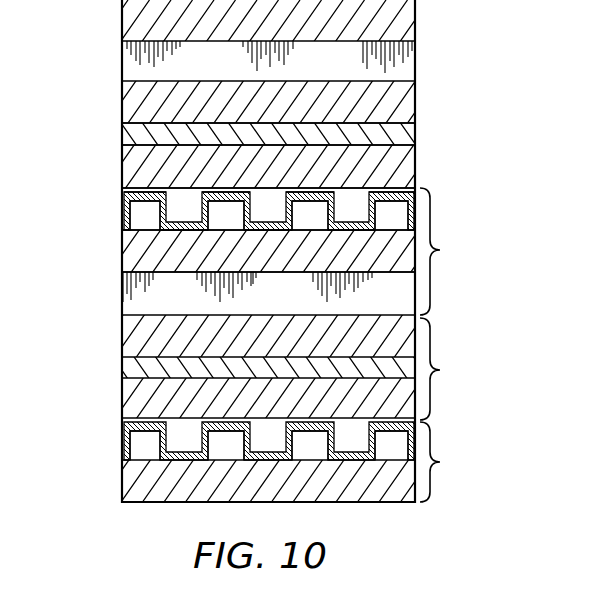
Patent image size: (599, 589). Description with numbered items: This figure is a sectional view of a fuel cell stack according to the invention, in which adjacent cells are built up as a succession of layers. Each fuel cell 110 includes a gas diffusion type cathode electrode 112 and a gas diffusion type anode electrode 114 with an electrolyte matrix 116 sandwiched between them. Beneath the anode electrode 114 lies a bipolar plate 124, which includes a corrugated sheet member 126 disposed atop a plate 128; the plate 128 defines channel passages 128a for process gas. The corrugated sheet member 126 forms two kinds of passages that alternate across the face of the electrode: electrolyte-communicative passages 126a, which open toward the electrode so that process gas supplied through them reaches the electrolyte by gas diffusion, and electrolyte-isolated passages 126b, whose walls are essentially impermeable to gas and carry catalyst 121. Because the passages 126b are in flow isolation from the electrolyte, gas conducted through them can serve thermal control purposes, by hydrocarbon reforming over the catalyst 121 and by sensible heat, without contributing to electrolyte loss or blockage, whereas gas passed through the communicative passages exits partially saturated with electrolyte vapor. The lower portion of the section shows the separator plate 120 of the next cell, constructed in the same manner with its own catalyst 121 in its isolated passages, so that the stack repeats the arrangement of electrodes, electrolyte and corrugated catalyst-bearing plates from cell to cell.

The fuel cell 110 is at (445, 371).
The cathode electrode 112 is at (410, 97).
The anode electrode 114 is at (408, 161).
The electrolyte matrix 116 is at (417, 131).
The separator plate 120 is at (447, 462).
The catalyst 121 is at (397, 203).
The bipolar plate 124 is at (445, 250).
The corrugated sheet member 126 is at (123, 202).
The electrolyte-communicative passages 126a is at (181, 195).
The electrolyte-isolated catalyst-containing passages 126b is at (143, 220).
The plate 128 is at (130, 261).
The channel passages 128a is at (133, 300).